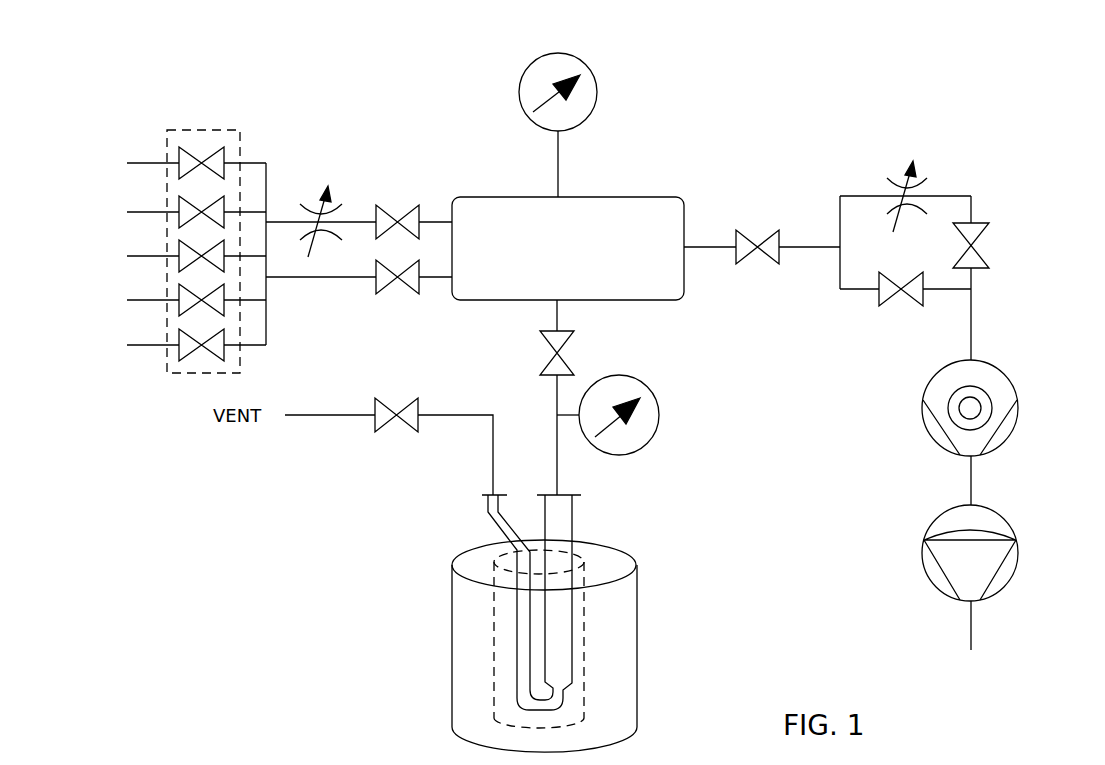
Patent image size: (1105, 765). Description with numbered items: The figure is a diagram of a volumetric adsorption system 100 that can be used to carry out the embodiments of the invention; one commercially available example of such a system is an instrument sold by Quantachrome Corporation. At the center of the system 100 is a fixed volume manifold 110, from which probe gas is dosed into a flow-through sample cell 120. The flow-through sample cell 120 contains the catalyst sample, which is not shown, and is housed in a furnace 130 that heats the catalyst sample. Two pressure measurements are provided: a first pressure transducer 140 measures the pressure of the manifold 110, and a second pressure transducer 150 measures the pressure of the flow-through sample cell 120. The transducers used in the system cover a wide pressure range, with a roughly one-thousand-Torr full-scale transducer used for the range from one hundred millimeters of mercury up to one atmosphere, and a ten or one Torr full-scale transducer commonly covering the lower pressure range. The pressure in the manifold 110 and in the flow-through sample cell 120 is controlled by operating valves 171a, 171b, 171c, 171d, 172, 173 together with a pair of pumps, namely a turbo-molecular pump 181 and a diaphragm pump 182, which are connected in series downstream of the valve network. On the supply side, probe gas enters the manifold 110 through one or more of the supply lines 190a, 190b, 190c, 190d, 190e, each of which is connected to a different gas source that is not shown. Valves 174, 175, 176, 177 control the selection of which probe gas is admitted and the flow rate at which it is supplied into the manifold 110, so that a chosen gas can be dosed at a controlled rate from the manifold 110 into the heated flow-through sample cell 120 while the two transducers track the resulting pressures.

The system 100 is at (314, 629).
The fixed volume manifold 110 is at (614, 197).
The flow-through sample cell 120 is at (530, 703).
The furnace 130 is at (637, 652).
The first pressure transducer 140 is at (578, 58).
The second pressure transducer 150 is at (655, 398).
The valve 171a is at (770, 238).
The valve 171b is at (890, 302).
The valve 171c is at (980, 223).
The valve 171d is at (893, 192).
The valve 172 is at (540, 340).
The valve 173 is at (378, 432).
The valve 174 is at (167, 130).
The valve 175 is at (410, 205).
The valve 176 is at (412, 292).
The valve 177 is at (311, 212).
The turbo-molecular pump 181 is at (1005, 371).
The diaphragm pump 182 is at (1005, 516).
The supply line 190a is at (167, 163).
The supply line 190b is at (167, 212).
The supply line 190c is at (167, 256).
The supply line 190d is at (167, 300).
The supply line 190e is at (167, 345).